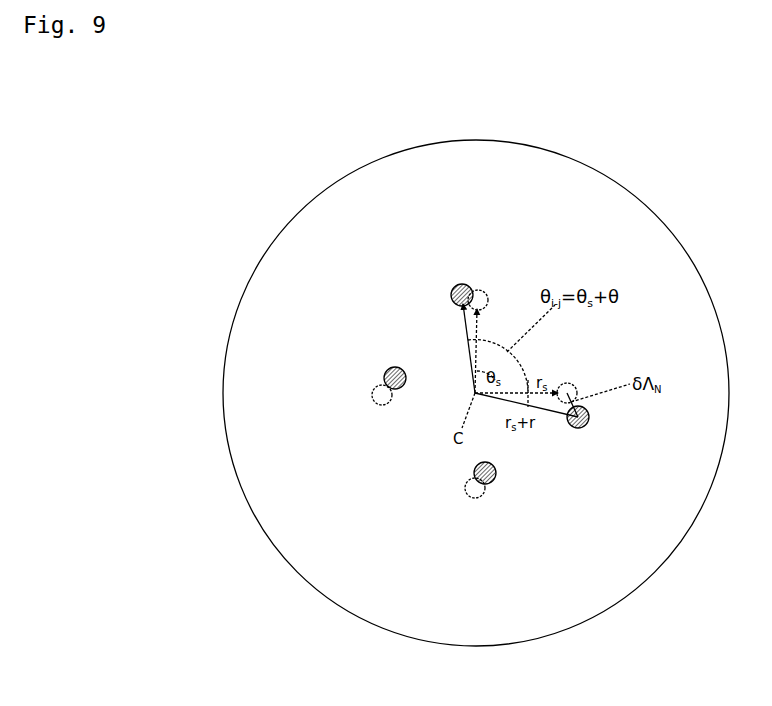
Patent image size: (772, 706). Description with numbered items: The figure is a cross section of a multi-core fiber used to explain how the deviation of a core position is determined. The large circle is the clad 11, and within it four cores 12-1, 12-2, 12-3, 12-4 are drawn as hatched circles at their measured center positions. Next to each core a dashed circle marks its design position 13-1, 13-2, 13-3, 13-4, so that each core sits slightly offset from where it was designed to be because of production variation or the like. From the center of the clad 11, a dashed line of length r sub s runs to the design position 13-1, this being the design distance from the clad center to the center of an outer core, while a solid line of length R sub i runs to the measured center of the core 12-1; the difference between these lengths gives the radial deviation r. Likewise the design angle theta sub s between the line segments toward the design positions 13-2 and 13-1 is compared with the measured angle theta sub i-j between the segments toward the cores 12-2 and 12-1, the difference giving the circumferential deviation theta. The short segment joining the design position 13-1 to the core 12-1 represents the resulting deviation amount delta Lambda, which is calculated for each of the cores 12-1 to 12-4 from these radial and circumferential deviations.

The clad 11 is at (595, 170).
The core 12-1 is at (590, 417).
The core 12-2 is at (452, 290).
The core 12-3 is at (384, 373).
The core 12-4 is at (493, 477).
The design position 13-1 is at (574, 385).
The design position 13-2 is at (485, 291).
The design position 13-3 is at (372, 395).
The design position 13-4 is at (471, 498).